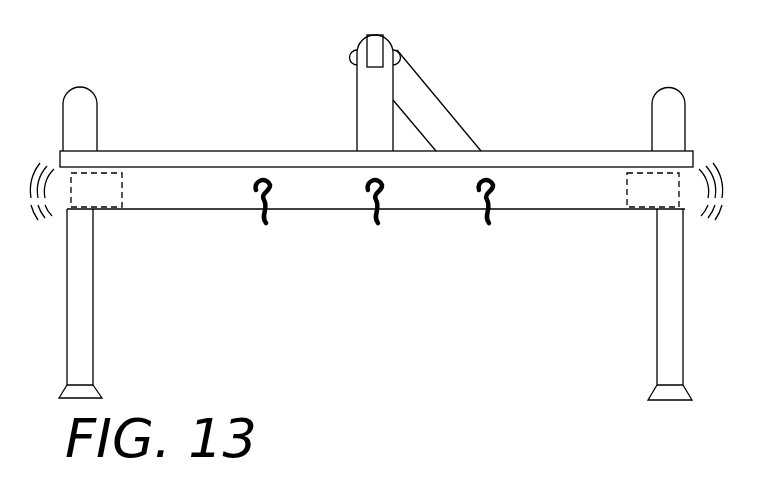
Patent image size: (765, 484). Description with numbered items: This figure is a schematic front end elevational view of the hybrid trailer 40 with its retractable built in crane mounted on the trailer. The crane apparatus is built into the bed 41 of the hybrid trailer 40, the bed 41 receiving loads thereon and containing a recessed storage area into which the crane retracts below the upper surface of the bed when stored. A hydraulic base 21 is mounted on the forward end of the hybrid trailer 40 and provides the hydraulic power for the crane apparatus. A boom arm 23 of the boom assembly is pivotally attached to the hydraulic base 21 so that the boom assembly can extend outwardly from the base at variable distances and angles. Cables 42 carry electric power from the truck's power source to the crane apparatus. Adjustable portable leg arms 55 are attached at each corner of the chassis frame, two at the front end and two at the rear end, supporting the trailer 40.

The hydraulic base 21 is at (357, 117).
The boom arm 23 is at (456, 120).
The hybrid trailer 40 is at (228, 140).
The bed 41 is at (537, 151).
The cables 42 is at (482, 215).
The adjustable portable leg arms 55 is at (93, 353).